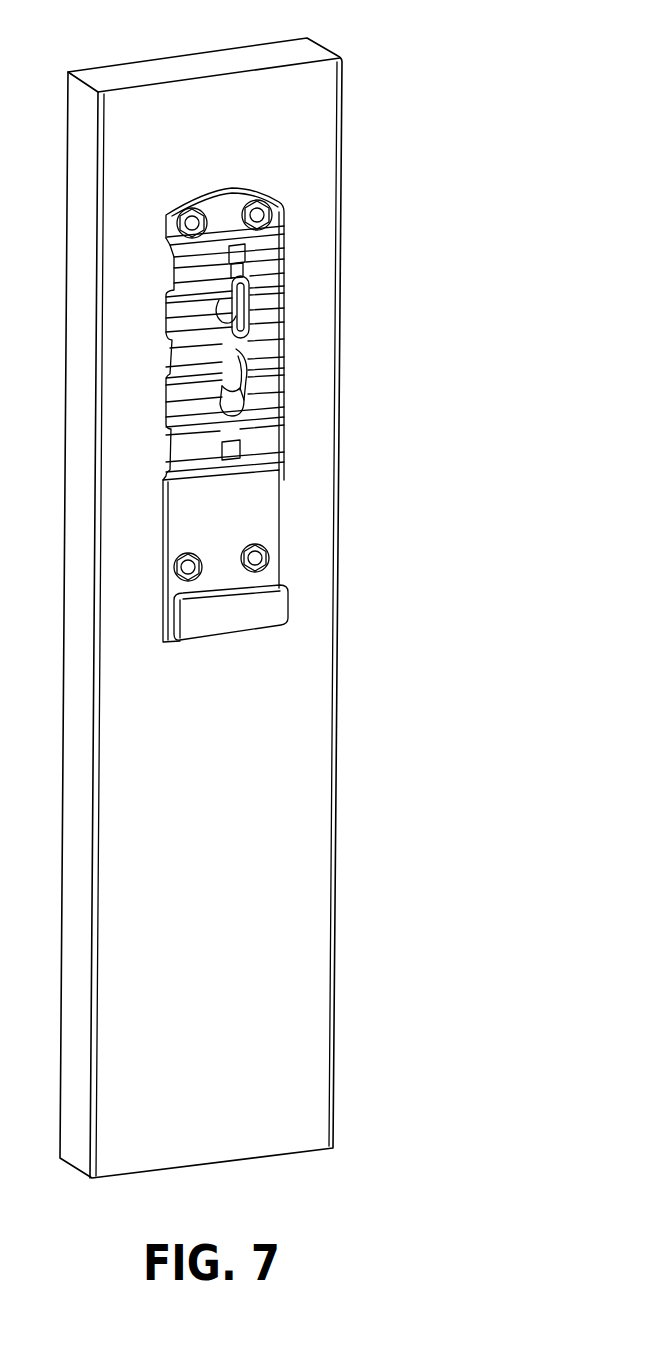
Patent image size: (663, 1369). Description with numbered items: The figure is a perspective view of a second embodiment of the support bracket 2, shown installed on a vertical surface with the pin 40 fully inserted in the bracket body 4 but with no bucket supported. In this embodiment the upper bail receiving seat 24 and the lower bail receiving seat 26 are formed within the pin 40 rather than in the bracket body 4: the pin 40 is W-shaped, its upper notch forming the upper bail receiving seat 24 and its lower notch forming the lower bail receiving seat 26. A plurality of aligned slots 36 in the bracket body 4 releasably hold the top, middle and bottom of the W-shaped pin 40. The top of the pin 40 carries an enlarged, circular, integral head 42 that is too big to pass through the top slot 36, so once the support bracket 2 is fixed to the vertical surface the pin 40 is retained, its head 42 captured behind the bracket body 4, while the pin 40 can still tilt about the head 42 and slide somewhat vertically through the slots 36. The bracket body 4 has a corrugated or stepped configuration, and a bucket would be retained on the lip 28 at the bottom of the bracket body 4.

The support bracket 2 is at (440, 192).
The bracket body 4 is at (264, 415).
The upper bail receiving seat 24 is at (217, 314).
The lower bail receiving seat 26 is at (227, 398).
The lip 28 is at (263, 607).
The slots 36 is at (243, 282).
The pin 40 is at (262, 297).
The head 42 is at (250, 250).